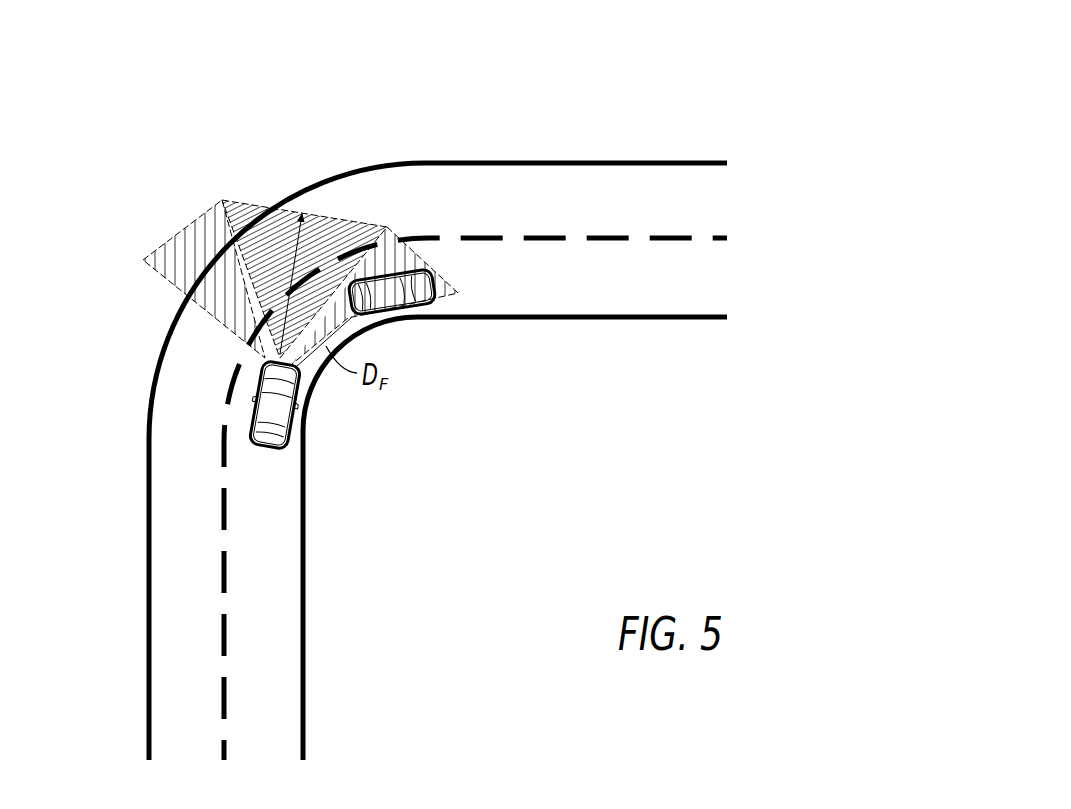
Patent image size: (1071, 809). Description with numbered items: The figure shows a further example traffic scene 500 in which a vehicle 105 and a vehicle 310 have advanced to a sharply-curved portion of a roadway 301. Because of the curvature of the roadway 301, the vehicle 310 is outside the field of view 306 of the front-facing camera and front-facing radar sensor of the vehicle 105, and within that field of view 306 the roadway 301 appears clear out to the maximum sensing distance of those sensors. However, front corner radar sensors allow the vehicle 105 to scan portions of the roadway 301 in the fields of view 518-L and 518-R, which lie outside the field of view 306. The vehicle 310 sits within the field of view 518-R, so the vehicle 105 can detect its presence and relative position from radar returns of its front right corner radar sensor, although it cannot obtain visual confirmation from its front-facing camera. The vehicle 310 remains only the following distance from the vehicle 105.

The traffic scene 500 is at (270, 66).
The roadway 301 is at (737, 236).
The field of view 306 is at (265, 193).
The field of view 518-L is at (159, 236).
The field of view 518-R is at (447, 268).
The vehicle 310 is at (397, 324).
The vehicle 105 is at (285, 452).